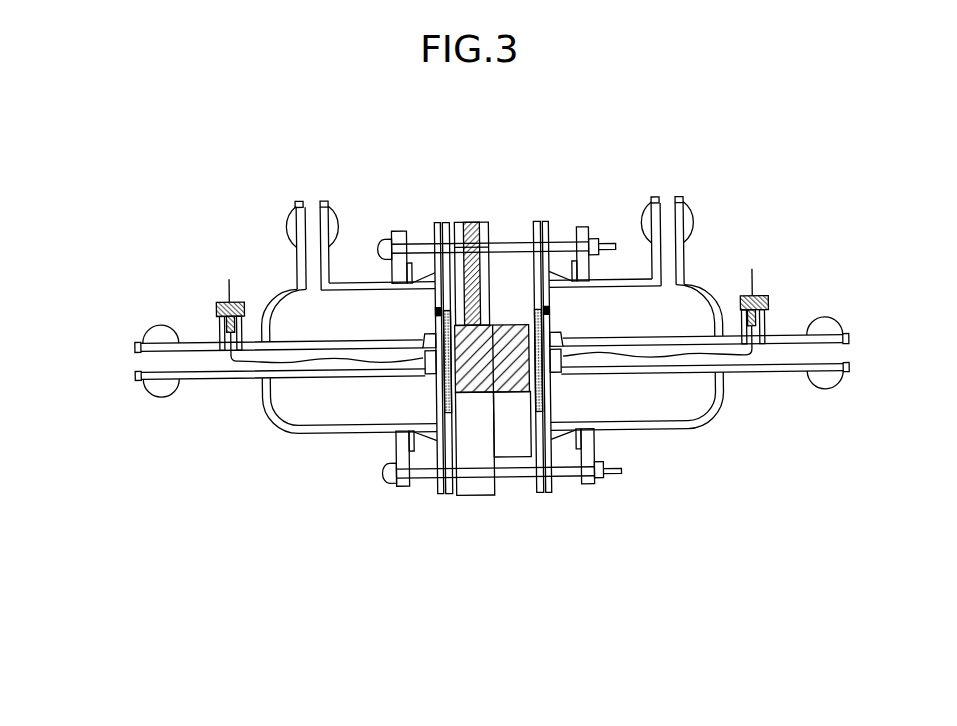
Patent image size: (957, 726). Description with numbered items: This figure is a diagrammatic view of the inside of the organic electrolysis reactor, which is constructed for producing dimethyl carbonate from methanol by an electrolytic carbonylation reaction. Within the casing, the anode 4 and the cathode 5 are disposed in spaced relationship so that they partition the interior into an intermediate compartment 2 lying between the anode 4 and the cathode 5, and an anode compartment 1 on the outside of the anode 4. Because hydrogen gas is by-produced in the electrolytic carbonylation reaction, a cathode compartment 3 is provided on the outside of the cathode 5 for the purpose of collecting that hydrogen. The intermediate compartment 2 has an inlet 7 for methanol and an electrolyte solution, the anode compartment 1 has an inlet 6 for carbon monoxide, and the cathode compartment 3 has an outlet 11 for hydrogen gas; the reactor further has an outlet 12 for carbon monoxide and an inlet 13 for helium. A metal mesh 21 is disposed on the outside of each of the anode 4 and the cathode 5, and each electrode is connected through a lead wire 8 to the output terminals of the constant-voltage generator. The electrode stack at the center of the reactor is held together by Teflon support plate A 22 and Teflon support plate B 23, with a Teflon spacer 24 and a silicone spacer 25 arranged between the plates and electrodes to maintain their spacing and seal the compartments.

The anode compartment 1 is at (677, 307).
The intermediate compartment 2 is at (536, 222).
The cathode compartment 3 is at (303, 306).
The anode 4 is at (546, 307).
The cathode 5 is at (437, 306).
The inlet for carbon monoxide 6 is at (845, 373).
The inlet for methanol and an electrolyte solution 7 is at (478, 222).
The lead wire 8 is at (228, 296).
The outlet for hydrogen 11 is at (298, 200).
The outlet for carbon monoxide 12 is at (681, 199).
The inlet for helium 13 is at (140, 378).
The metal mesh 21 is at (437, 372).
The Teflon support plate A 22 is at (549, 493).
The Teflon support plate B 23 is at (534, 493).
The Teflon spacer 24 is at (465, 407).
The silicone spacer 25 is at (515, 403).